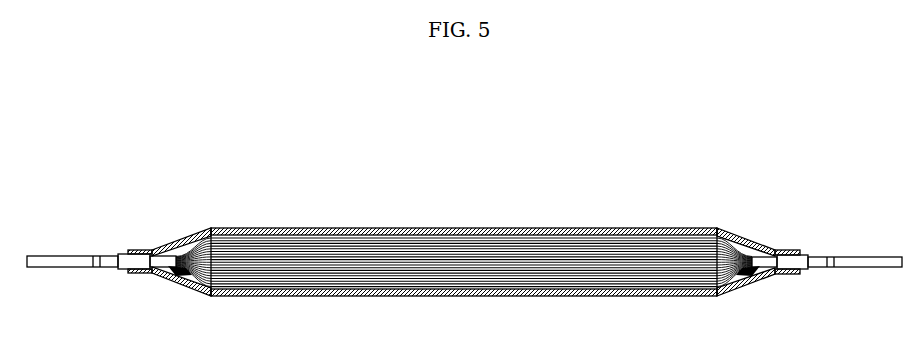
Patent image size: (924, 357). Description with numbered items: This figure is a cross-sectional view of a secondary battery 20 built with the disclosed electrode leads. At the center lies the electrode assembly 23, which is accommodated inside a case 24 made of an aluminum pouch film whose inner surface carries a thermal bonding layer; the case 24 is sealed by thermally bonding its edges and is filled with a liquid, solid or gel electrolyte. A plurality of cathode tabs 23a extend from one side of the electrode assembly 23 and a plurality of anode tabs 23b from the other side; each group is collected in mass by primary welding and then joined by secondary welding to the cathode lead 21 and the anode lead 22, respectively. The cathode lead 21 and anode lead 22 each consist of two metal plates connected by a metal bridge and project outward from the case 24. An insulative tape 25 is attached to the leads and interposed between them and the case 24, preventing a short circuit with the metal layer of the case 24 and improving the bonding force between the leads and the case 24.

The secondary battery 20 is at (396, 190).
The cathode lead 21 is at (76, 248).
The anode lead 22 is at (856, 248).
The electrode assembly 23 is at (402, 288).
The cathode tabs 23a is at (196, 252).
The anode tabs 23b is at (733, 252).
The case 24 is at (505, 229).
The insulative tape 25 is at (135, 270).